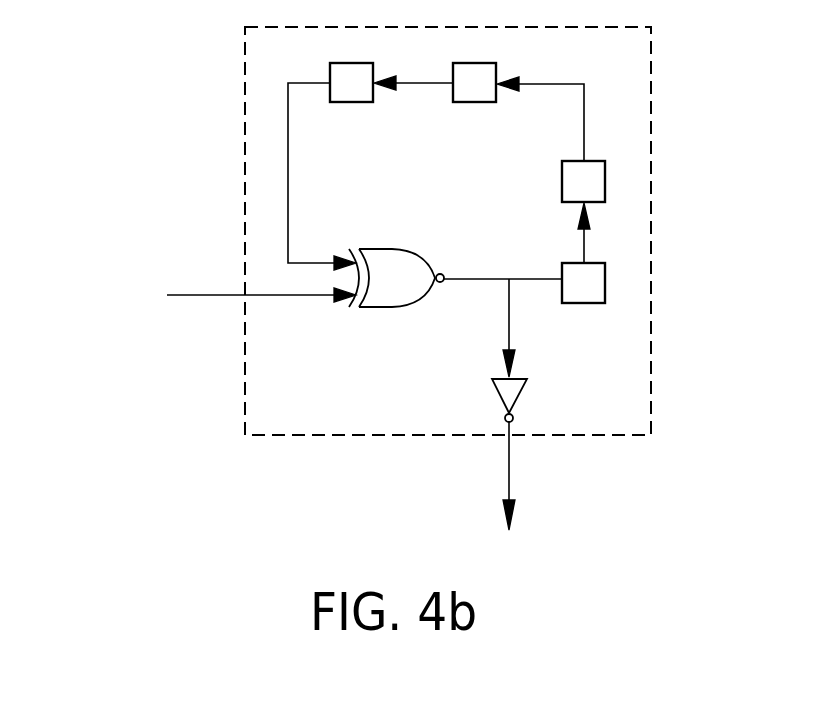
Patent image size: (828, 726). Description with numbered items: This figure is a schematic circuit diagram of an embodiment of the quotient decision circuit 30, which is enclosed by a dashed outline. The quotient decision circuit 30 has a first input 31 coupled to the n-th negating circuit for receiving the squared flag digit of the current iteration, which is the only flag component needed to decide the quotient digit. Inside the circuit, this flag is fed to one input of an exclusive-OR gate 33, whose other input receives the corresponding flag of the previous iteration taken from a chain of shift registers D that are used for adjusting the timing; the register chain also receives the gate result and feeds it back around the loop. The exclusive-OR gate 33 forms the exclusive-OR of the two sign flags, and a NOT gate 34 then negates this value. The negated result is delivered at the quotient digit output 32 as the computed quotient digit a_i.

The quotient decision circuit 30 is at (652, 50).
The first input 31 is at (297, 300).
The quotient digit output 32 is at (509, 470).
The exclusive-OR gate 33 is at (393, 307).
The NOT gate 34 is at (526, 388).